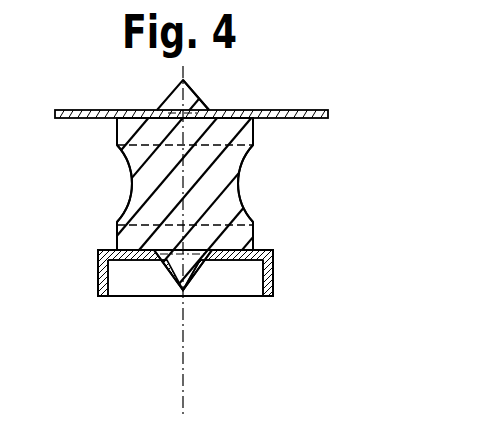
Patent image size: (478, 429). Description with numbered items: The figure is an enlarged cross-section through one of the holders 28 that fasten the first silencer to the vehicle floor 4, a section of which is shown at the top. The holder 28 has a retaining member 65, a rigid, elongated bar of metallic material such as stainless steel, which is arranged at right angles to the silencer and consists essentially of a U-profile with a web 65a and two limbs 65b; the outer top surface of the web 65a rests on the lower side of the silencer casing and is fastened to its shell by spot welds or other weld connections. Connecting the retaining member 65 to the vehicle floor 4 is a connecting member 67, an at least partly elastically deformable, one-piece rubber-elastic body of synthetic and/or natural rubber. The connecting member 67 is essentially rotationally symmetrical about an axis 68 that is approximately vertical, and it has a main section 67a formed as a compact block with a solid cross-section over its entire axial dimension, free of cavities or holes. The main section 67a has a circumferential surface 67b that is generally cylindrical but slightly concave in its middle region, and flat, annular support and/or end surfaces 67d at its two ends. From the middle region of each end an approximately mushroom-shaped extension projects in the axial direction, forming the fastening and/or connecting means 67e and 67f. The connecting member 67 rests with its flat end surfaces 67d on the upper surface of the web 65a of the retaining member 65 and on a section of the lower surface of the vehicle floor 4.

The vehicle floor 4 is at (57, 112).
The holder 28 is at (98, 294).
The retaining member 65 is at (99, 250).
The web 65a is at (133, 262).
The limbs 65b is at (98, 277).
The connecting member 67 is at (130, 175).
The main section 67a is at (131, 192).
The circumferential surface 67b is at (238, 185).
The support and/or end surfaces 67d is at (238, 110).
The fastening and/or connecting means 67e is at (199, 272).
The fastening and/or connecting means 67f is at (166, 97).
The axis 68 is at (182, 393).